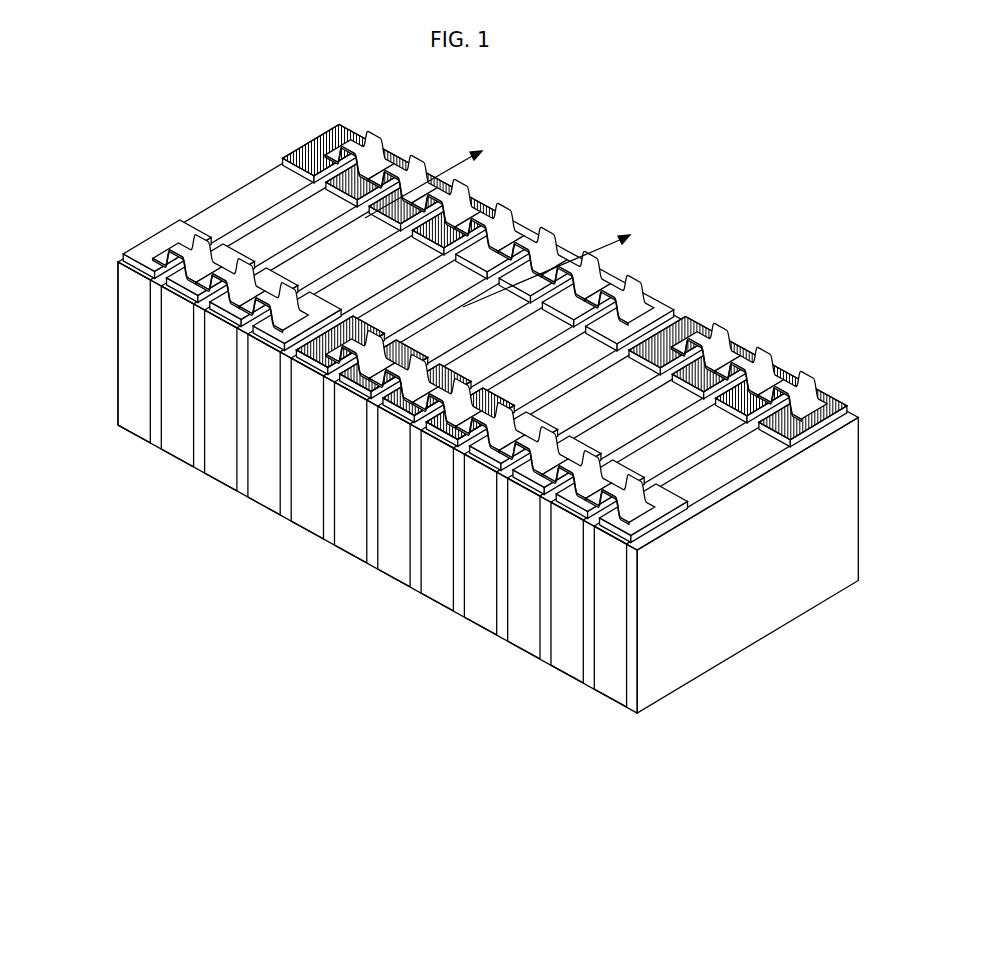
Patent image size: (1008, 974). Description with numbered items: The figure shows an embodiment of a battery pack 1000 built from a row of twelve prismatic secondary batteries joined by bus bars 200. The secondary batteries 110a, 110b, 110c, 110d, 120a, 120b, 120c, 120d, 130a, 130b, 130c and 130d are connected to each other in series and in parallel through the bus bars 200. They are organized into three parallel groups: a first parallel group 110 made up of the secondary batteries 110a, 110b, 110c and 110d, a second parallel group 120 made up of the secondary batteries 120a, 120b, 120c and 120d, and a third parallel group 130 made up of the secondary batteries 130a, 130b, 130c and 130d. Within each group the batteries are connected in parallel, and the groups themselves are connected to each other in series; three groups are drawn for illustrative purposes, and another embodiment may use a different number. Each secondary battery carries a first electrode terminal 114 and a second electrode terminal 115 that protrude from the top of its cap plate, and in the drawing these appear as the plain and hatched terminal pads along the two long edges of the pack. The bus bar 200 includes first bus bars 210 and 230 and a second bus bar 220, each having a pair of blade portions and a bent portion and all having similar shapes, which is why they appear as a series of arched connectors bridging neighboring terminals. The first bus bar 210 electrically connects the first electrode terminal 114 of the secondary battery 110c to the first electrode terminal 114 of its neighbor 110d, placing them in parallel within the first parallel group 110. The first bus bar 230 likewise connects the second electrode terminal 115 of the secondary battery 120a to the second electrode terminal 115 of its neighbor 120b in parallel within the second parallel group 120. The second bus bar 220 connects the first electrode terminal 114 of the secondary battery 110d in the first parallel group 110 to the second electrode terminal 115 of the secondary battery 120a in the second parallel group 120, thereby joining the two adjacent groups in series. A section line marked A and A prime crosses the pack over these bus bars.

The battery pack 1000 is at (847, 114).
The first parallel group 110 is at (272, 558).
The secondary battery 110a is at (134, 422).
The secondary battery 110b is at (177, 446).
The secondary battery 110c is at (221, 470).
The secondary battery 110d is at (264, 494).
The second parallel group 120 is at (445, 653).
The secondary battery 120a is at (307, 518).
The secondary battery 120b is at (351, 542).
The secondary battery 120c is at (394, 566).
The secondary battery 120d is at (437, 590).
The third parallel group 130 is at (615, 755).
The secondary battery 130a is at (480, 614).
The secondary battery 130b is at (524, 638).
The secondary battery 130c is at (567, 662).
The secondary battery 130d is at (610, 686).
The first electrode terminal 114 is at (165, 241).
The second electrode terminal 115 is at (356, 324).
The bus bar 200 is at (644, 150).
The first bus bar 210 is at (460, 188).
The second bus bar 220 is at (507, 213).
The first bus bar 230 is at (550, 235).